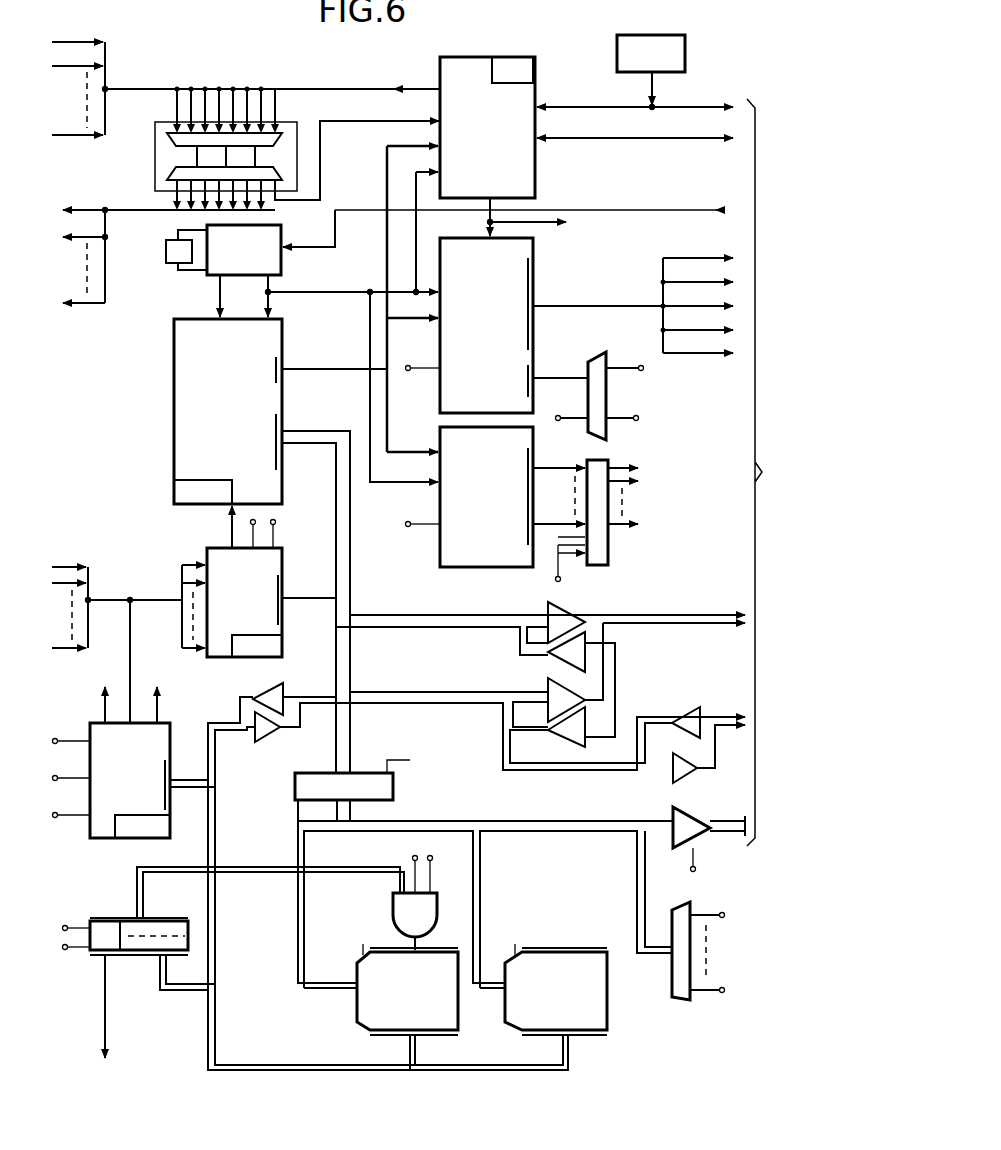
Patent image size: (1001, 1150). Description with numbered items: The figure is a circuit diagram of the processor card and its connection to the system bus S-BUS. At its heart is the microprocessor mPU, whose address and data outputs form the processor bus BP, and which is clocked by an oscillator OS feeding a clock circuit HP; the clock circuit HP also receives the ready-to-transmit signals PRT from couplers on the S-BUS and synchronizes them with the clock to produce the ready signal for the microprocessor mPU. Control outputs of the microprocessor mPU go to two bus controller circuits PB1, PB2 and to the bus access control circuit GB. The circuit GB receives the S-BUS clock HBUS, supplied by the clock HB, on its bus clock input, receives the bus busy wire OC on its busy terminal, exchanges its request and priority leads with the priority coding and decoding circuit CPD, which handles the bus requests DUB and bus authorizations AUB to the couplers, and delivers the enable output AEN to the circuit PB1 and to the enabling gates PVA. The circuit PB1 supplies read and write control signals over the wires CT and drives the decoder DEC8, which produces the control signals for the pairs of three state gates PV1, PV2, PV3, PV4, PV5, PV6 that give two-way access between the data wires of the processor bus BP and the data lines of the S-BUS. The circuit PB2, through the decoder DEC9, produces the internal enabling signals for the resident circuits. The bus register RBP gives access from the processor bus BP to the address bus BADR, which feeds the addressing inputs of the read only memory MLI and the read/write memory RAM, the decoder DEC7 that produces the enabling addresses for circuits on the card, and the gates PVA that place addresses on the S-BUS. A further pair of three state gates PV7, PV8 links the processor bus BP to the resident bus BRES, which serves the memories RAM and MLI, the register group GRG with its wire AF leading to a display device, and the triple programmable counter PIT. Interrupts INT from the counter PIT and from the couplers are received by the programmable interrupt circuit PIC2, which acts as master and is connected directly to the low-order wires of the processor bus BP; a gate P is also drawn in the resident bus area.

The bus requests DUB is at (79, 98).
The bus authorizations AUB is at (79, 264).
The priority coding and decoding circuit CPD is at (290, 148).
The ready to transmit signals PRT is at (531, 199).
The oscillator OS is at (166, 250).
The clock circuit HP is at (218, 279).
The microprocessor mPU is at (174, 431).
The processor bus BP is at (303, 437).
The circuit for controlling access to the S-BUS GB is at (537, 90).
The S-BUS clock HBUS is at (638, 94).
The bus busy wire OC is at (635, 127).
The clock HB is at (650, 33).
The enable output AEN is at (548, 218).
The system bus S-BUS is at (755, 437).
The bus controller circuit PB1 is at (440, 386).
The decoder DEC8 is at (592, 352).
The bus controller circuit PB2 is at (440, 552).
The decoder DEC9 is at (610, 550).
The control wires CT is at (697, 318).
The programmable interrupt circuit PIC2 is at (300, 578).
The interrupts INT is at (116, 638).
The triple programmable counter PIT is at (92, 838).
The three state gate PV7 is at (283, 692).
The three state gate PV8 is at (262, 742).
The resident bus BRES is at (215, 830).
The group of registers GRG is at (106, 921).
The wire to display device AF is at (120, 1012).
The bus register RBP is at (395, 790).
The address bus BADR is at (548, 822).
The AND gate P is at (403, 910).
The read/write memory RAM is at (360, 1018).
The read only memory MLI is at (550, 952).
The group of enabling gates PVA is at (672, 830).
The decoder DEC7 is at (699, 968).
The three state gate PV1 is at (548, 605).
The three state gate PV2 is at (595, 633).
The three state gate PV3 is at (540, 708).
The three state gate PV4 is at (585, 740).
The three state gate PV5 is at (672, 722).
The three state gate PV6 is at (673, 770).